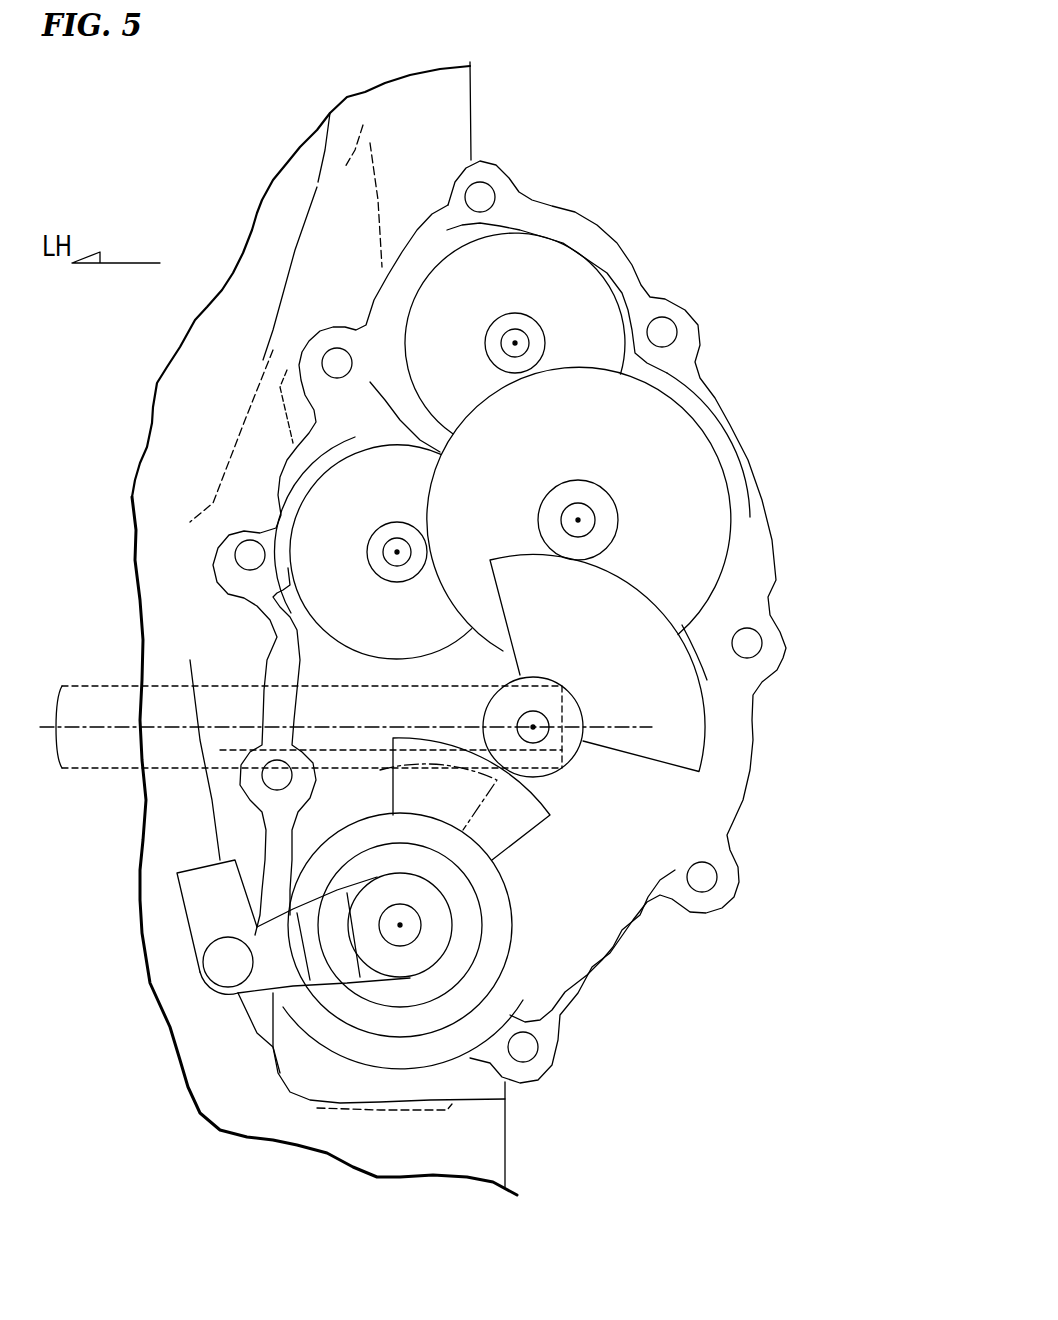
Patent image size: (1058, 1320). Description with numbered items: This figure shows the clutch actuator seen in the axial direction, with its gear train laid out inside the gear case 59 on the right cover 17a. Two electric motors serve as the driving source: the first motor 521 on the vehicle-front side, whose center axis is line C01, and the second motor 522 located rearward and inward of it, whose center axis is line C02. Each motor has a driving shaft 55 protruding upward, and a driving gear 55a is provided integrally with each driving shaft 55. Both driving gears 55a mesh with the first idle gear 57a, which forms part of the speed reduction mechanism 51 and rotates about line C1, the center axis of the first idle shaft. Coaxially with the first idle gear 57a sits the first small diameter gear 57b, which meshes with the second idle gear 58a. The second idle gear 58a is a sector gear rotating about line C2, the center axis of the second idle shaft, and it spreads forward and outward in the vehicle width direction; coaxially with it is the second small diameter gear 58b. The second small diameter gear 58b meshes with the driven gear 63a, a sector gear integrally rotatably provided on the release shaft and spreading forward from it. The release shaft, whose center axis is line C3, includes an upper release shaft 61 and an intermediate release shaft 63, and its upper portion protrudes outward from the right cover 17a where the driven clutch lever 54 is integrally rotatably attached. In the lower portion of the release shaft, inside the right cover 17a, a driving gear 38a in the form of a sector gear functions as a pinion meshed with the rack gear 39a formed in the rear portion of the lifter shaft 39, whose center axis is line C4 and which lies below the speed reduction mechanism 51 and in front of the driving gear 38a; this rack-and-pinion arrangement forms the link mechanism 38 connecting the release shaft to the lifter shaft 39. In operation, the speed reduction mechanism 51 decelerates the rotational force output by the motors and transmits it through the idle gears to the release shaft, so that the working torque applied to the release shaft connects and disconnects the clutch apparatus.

The right cover 17a is at (476, 81).
The gear case 59 is at (596, 226).
The lifter shaft 39 is at (428, 682).
The center axis of the lifter shaft C4 is at (618, 715).
The first motor 521 is at (583, 268).
The driving gear 55a is at (518, 330).
The driving shaft 55 is at (385, 577).
The center axis of the first motor C01 is at (517, 343).
The second motor 522 is at (315, 512).
The center axis of the second motor C02 is at (397, 552).
The first idle gear 57a is at (710, 487).
The speed reduction mechanism 51 is at (708, 436).
The first small diameter gear 57b is at (600, 532).
The center axis of the first idle shaft C1 is at (578, 520).
The second idle gear 58a is at (680, 690).
The second small diameter gear 58b is at (672, 802).
The center axis of the second idle shaft C2 is at (533, 727).
The intermediate release shaft 63 is at (500, 930).
The driven gear 63a is at (513, 833).
The upper release shaft 61 is at (420, 930).
The center axis of the release shaft C3 is at (400, 925).
The driven clutch lever 54 is at (287, 970).
The link mechanism 38 is at (68, 800).
The rack gear 39a is at (340, 792).
The driving gear 38a is at (337, 793).